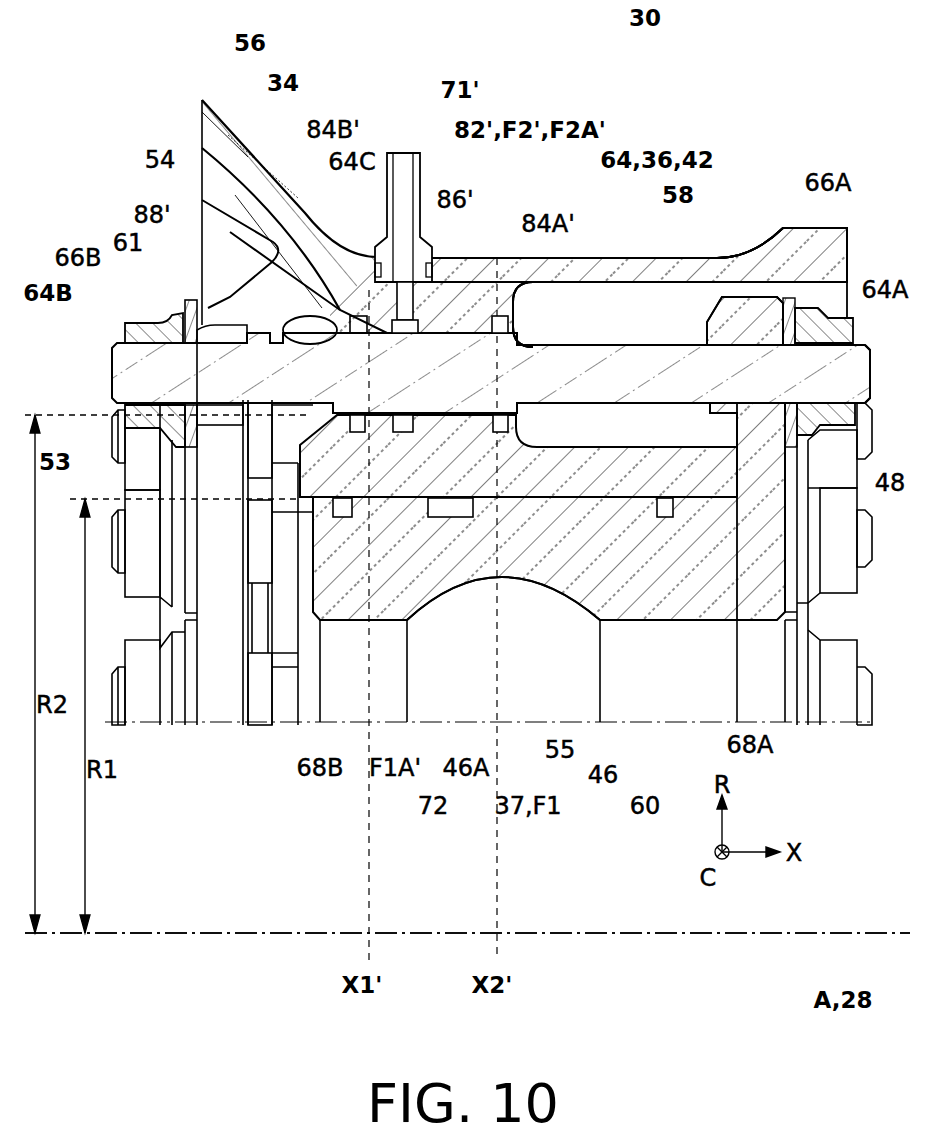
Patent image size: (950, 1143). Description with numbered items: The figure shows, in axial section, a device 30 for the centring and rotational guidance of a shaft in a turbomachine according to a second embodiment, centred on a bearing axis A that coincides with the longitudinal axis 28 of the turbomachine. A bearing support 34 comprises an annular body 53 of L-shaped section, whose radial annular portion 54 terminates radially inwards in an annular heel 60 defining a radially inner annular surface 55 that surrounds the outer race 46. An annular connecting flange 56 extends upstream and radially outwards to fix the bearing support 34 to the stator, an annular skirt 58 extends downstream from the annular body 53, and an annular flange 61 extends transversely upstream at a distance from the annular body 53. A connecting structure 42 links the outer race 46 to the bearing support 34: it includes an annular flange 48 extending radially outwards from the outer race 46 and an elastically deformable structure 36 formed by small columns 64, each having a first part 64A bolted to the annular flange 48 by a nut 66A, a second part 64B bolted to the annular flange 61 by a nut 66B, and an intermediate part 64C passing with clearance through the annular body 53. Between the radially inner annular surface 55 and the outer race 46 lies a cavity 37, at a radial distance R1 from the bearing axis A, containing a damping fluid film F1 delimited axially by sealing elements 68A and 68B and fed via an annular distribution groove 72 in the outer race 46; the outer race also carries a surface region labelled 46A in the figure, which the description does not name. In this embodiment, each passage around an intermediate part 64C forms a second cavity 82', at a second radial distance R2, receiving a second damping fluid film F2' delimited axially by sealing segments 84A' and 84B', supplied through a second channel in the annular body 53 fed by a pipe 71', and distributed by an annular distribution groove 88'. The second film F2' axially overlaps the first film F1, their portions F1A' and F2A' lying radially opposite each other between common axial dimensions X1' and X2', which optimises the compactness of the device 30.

The device 30 is at (640, 32).
The annular connecting flange 56 is at (228, 128).
The bearing support 34 is at (283, 98).
The radial annular portion 54 is at (235, 232).
The pipe 71' is at (407, 218).
The sealing segment 84B' is at (346, 226).
The intermediate part 64C is at (412, 383).
The second cavity 82' is at (588, 248).
The second damping fluid film F2' is at (615, 248).
The portion of the second damping fluid film F2A' is at (615, 248).
The small column 64 is at (622, 175).
The elastically deformable structure 36 is at (576, 332).
The connecting structure 42 is at (576, 332).
The annular skirt 58 is at (643, 265).
The nut 66A is at (833, 320).
The first part 64A is at (860, 372).
The second part 64B is at (133, 360).
The nut 66B is at (143, 330).
The annular flange 61 is at (212, 322).
The annular distribution groove 88' is at (254, 286).
The sealing segment 84A' is at (516, 285).
The annular body 53 is at (78, 462).
The annular flange 48 is at (768, 453).
The outer race 46 is at (630, 480).
The sealing element 68B is at (341, 512).
The sealing element 68A is at (673, 515).
The portion of the first damping fluid film F1A' is at (395, 624).
The annular distribution groove 72 is at (443, 507).
The housing arch surface 46A is at (447, 598).
The radially inner annular surface 55 is at (585, 500).
The cavity 37 is at (565, 507).
The damping fluid film F1 is at (565, 507).
The annular heel 60 is at (652, 560).
The radial distance R1 is at (90, 770).
The second radial distance R2 is at (40, 700).
The axial dimension X1' is at (365, 637).
The axial dimension X2' is at (494, 621).
The bearing axis A is at (836, 988).
The longitudinal axis 28 is at (836, 988).